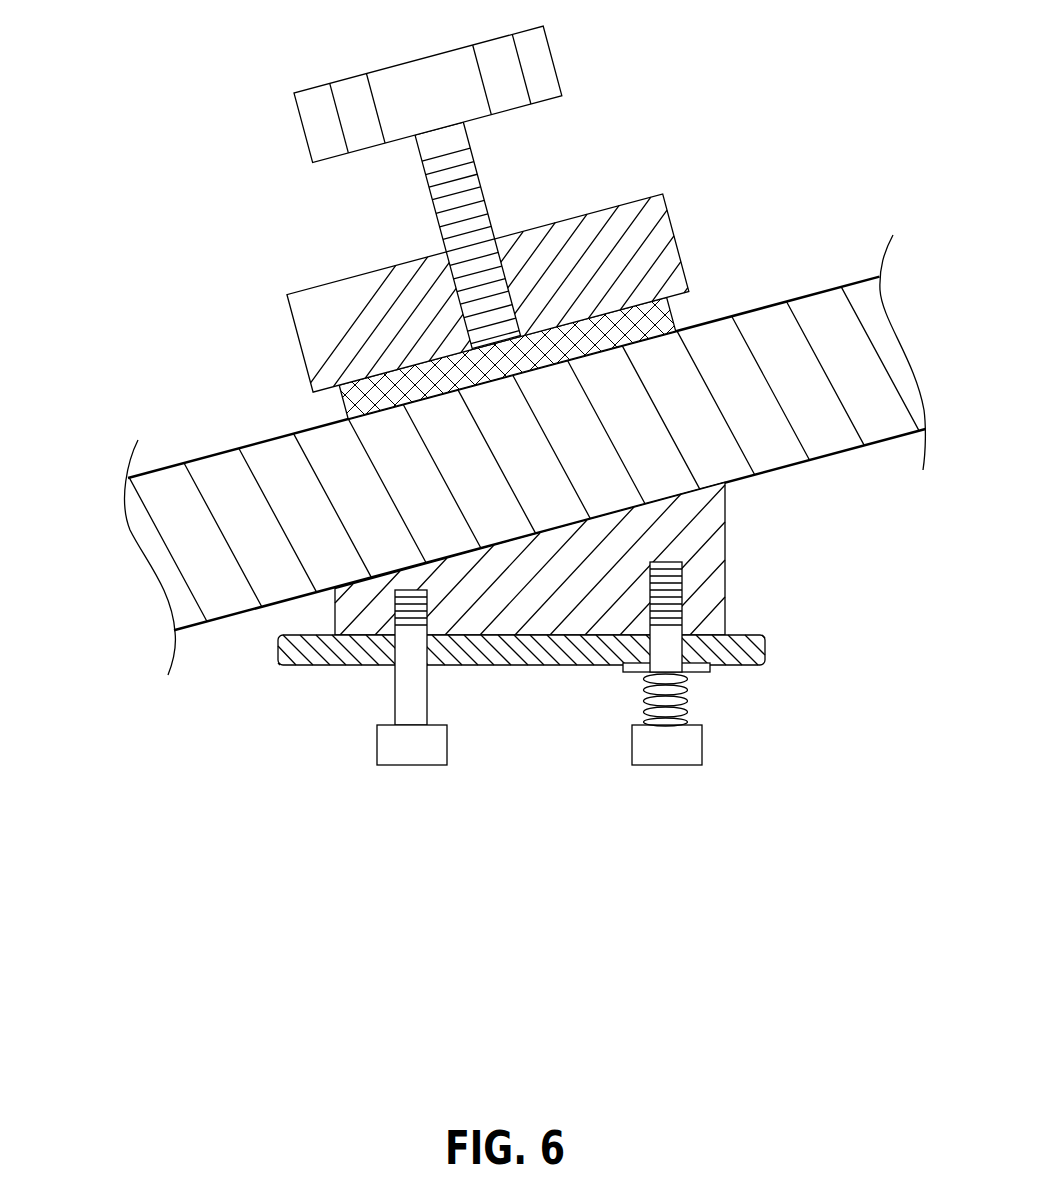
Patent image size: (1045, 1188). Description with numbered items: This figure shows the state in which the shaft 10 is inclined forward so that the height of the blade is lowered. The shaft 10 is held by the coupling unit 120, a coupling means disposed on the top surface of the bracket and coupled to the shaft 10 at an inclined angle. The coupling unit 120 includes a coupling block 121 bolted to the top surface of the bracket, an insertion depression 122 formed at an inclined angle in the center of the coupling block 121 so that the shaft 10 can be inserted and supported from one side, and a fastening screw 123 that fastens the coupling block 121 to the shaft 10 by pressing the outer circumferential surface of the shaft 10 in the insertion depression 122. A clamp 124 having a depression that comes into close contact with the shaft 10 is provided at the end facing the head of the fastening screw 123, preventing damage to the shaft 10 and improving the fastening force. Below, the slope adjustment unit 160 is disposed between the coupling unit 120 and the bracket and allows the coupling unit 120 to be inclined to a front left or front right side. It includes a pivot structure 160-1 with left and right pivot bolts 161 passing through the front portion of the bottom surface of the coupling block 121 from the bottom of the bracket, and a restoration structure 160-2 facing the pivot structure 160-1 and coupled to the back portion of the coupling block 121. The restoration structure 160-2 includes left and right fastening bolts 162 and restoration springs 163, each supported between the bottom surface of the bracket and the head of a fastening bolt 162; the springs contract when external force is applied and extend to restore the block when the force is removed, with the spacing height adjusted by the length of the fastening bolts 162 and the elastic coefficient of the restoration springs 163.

The shaft 10 is at (812, 322).
The coupling unit 120 is at (127, 130).
The coupling block 121 is at (333, 307).
The insertion depression 122 is at (318, 393).
The fastening screw 123 is at (312, 107).
The clamp 124 is at (385, 392).
The slope adjustment unit 160 is at (818, 910).
The pivot structure 160-1 is at (446, 750).
The restoration structure 160-2 is at (880, 840).
The pivot bolt 161 is at (413, 763).
The fastening bolt 162 is at (690, 742).
The restoration spring 163 is at (687, 687).